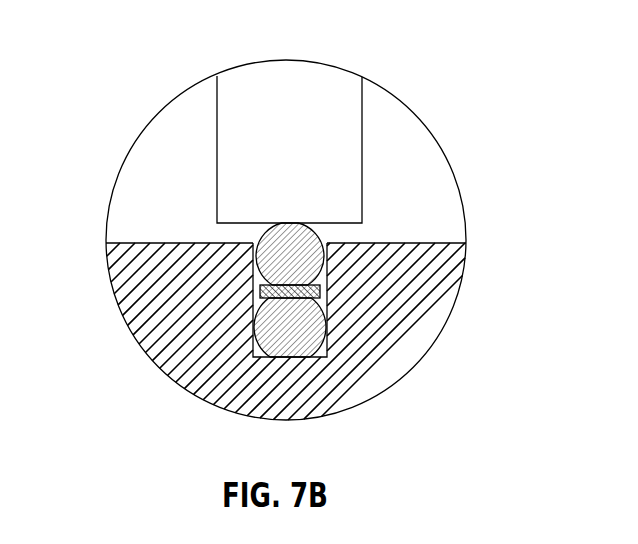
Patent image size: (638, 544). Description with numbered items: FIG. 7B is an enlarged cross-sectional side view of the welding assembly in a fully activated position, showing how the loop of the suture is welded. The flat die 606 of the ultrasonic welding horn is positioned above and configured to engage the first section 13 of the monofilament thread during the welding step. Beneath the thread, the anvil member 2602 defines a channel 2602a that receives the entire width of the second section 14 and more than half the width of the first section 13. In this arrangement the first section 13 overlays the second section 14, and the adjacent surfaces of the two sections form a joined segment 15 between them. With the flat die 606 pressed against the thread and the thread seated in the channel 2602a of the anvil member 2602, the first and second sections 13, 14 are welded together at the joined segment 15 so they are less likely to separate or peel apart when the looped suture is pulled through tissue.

The first section 13 is at (265, 247).
The second section 14 is at (275, 340).
The joined segment 15 is at (263, 290).
The flat die 606 is at (313, 173).
The anvil member 2602 is at (370, 360).
The channel 2602a is at (367, 245).